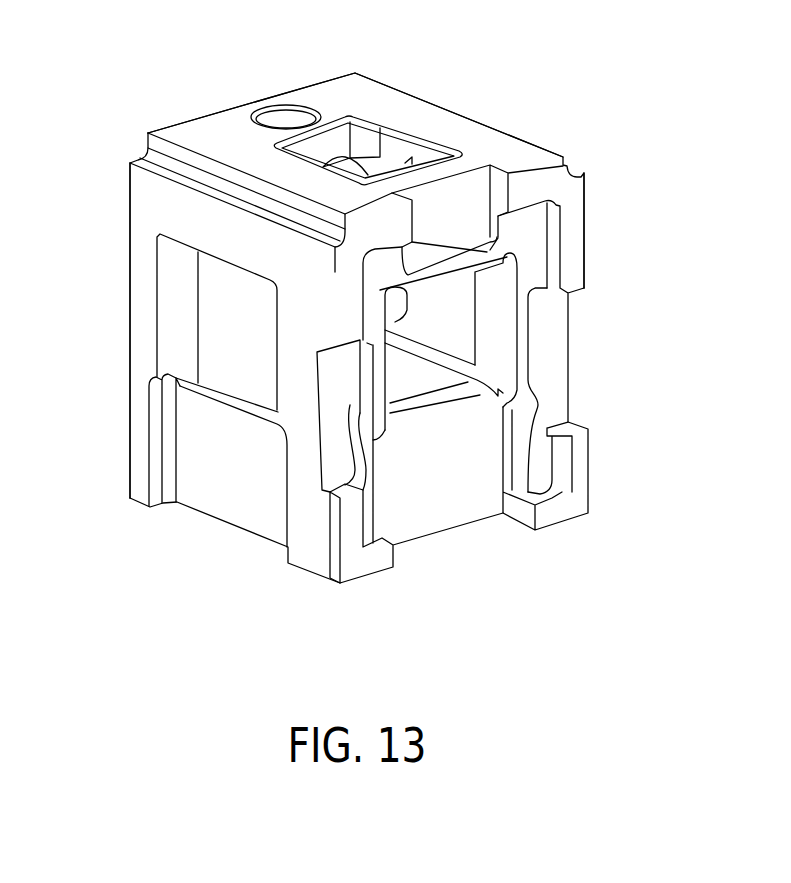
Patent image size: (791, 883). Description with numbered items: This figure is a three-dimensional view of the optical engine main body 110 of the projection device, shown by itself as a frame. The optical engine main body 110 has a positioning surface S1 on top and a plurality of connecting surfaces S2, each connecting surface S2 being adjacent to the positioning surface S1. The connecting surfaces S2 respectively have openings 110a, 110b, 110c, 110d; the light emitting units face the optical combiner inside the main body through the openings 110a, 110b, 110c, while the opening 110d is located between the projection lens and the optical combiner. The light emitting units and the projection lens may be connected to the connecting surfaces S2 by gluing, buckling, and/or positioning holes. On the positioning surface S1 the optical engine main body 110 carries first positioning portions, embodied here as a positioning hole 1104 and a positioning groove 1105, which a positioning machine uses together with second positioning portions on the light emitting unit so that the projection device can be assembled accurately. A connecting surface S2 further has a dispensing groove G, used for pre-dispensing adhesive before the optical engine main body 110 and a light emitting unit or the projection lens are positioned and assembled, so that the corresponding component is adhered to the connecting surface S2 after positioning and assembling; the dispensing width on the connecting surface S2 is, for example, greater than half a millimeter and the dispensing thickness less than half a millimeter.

The optical engine main body 110 is at (483, 137).
The opening 110a is at (279, 362).
The opening 110b is at (480, 322).
The opening 110c is at (432, 345).
The opening 110d is at (196, 277).
The positioning hole 1104 is at (292, 110).
The positioning groove 1105 is at (365, 133).
The positioning surface S1 is at (208, 132).
The connecting surface S2 is at (186, 211).
The dispensing groove G is at (550, 372).